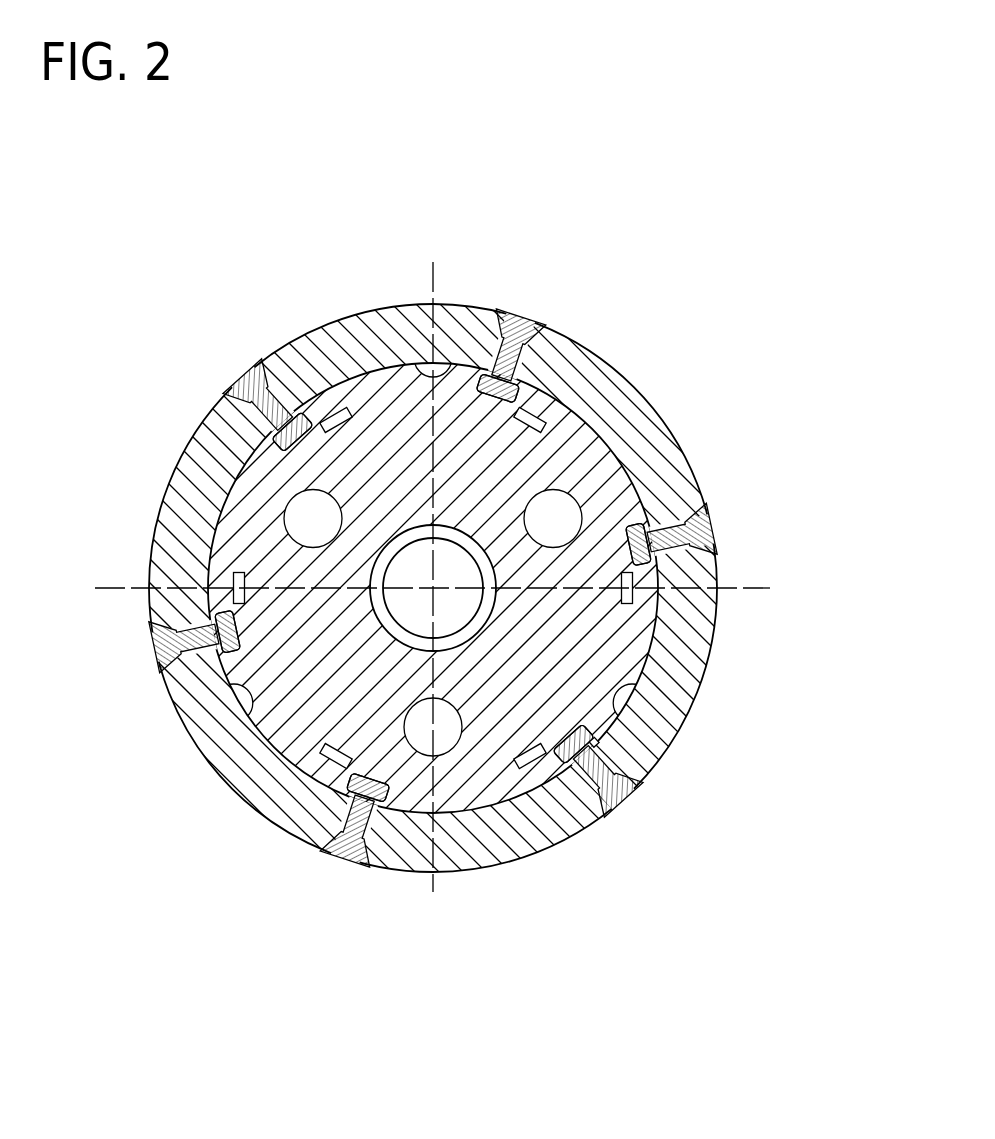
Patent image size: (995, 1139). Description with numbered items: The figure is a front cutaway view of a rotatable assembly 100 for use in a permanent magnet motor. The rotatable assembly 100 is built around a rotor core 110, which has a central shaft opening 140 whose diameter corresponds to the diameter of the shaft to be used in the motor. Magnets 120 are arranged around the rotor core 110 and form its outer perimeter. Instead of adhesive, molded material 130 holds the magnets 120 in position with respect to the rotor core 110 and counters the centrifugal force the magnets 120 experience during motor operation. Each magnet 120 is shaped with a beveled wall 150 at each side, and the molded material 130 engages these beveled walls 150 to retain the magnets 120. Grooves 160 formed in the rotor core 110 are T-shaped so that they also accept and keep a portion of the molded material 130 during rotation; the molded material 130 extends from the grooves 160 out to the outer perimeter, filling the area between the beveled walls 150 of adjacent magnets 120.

The rotatable assembly 100 is at (657, 380).
The rotor core 110 is at (592, 458).
The magnets 120 is at (340, 328).
The molded material 130 is at (512, 318).
The shaft opening 140 is at (459, 600).
The beveled wall 150 is at (647, 763).
The grooves 160 is at (600, 725).